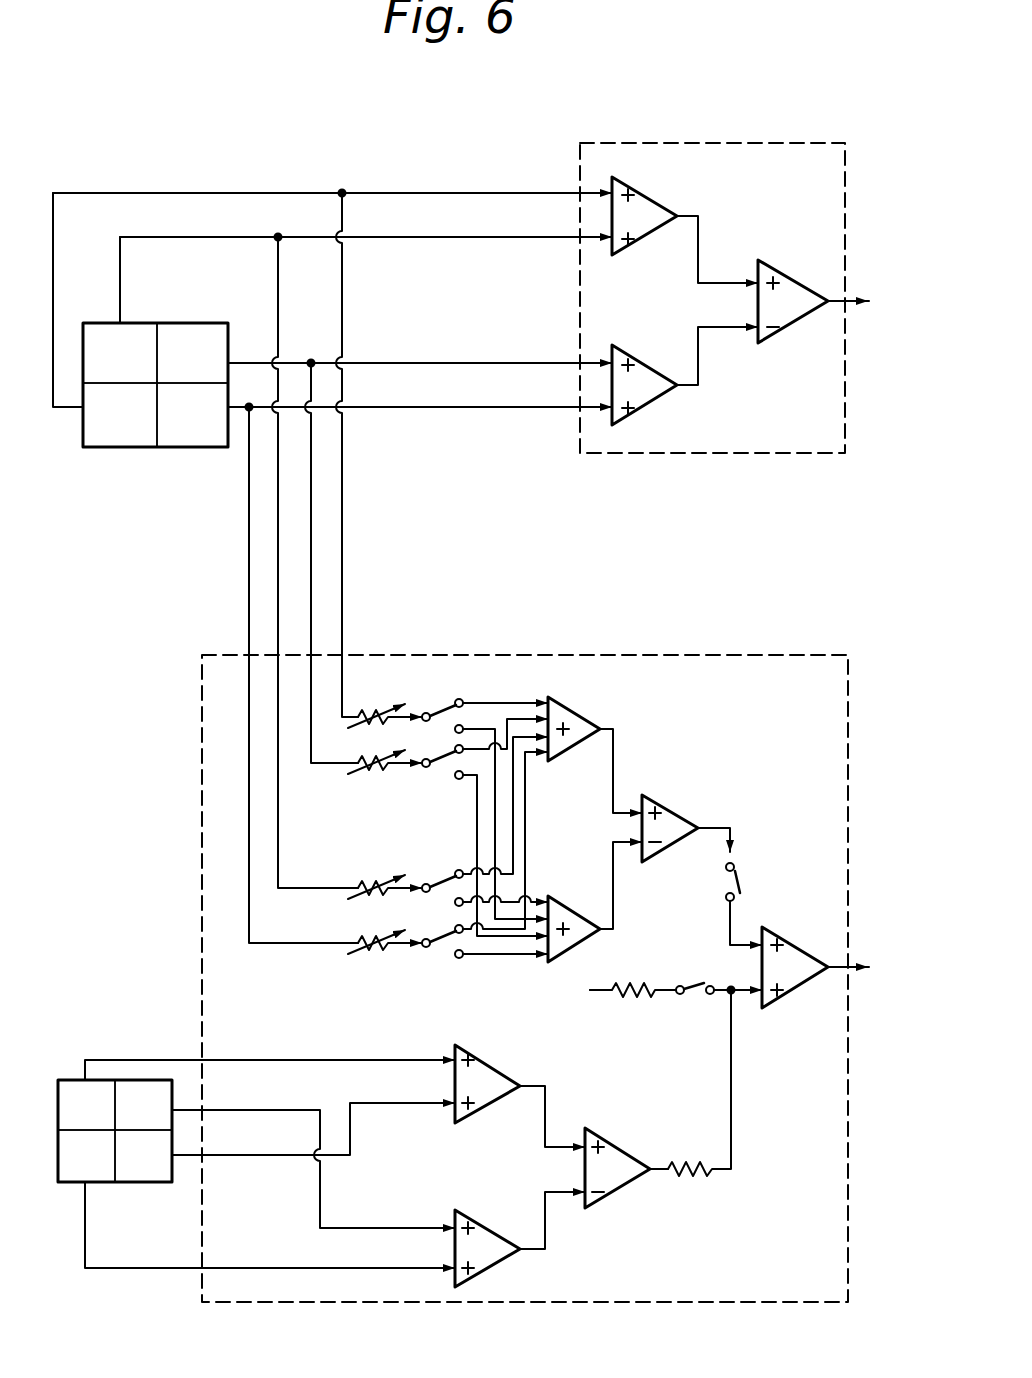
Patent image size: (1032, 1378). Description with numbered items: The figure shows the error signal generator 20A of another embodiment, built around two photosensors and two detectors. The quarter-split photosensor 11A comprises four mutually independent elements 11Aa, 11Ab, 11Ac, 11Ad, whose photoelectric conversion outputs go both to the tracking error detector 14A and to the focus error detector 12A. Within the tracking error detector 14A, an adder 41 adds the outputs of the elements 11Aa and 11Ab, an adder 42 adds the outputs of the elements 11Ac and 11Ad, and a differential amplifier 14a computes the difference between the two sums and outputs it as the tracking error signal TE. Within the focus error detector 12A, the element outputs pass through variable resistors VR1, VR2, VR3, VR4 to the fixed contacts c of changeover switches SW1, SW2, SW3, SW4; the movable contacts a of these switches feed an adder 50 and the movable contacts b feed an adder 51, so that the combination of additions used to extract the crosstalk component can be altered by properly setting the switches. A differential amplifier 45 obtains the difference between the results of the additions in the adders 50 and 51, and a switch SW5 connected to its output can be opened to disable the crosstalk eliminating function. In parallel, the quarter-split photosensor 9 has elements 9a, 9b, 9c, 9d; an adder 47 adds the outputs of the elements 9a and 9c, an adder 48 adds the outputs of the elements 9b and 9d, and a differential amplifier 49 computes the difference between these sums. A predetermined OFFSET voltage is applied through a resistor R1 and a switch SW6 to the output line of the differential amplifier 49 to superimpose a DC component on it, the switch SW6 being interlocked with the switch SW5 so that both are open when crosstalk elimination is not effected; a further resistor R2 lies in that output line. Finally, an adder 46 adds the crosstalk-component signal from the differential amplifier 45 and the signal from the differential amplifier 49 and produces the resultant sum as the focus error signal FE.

The error signal generator 20A is at (295, 129).
The tracking error detector 14A is at (722, 143).
The differential amplifier 14a is at (798, 280).
The adder 41 is at (657, 202).
The adder 42 is at (648, 362).
The quarter-split photosensor 11A is at (169, 351).
The element 11Aa is at (120, 353).
The element 11Ab is at (120, 415).
The element 11Ac is at (192, 415).
The element 11Ad is at (192, 353).
The focus error detector 12A is at (688, 653).
The variable resistor VR1 is at (385, 703).
The variable resistor VR2 is at (385, 752).
The variable resistor VR3 is at (385, 876).
The variable resistor VR4 is at (385, 932).
The changeover switch SW1 is at (438, 712).
The changeover switch SW2 is at (450, 779).
The changeover switch SW3 is at (437, 880).
The changeover switch SW4 is at (438, 962).
The switch SW5 is at (737, 880).
The switch SW6 is at (689, 984).
The adder 50 is at (588, 716).
The adder 51 is at (578, 915).
The differential amplifier 45 is at (673, 810).
The adder 46 is at (800, 998).
The resistor R1 is at (633, 1007).
The resistor R2 is at (699, 1101).
The offset voltage OFFSET is at (529, 991).
The quarter-split photosensor 9 is at (115, 1092).
The element 9a is at (86, 1105).
The element 9b is at (86, 1156).
The element 9c is at (143, 1156).
The element 9d is at (143, 1105).
The adder 47 is at (493, 1104).
The adder 48 is at (496, 1265).
The differential amplifier 49 is at (628, 1150).
The tracking error signal TE is at (888, 301).
The focus error signal FE is at (888, 967).